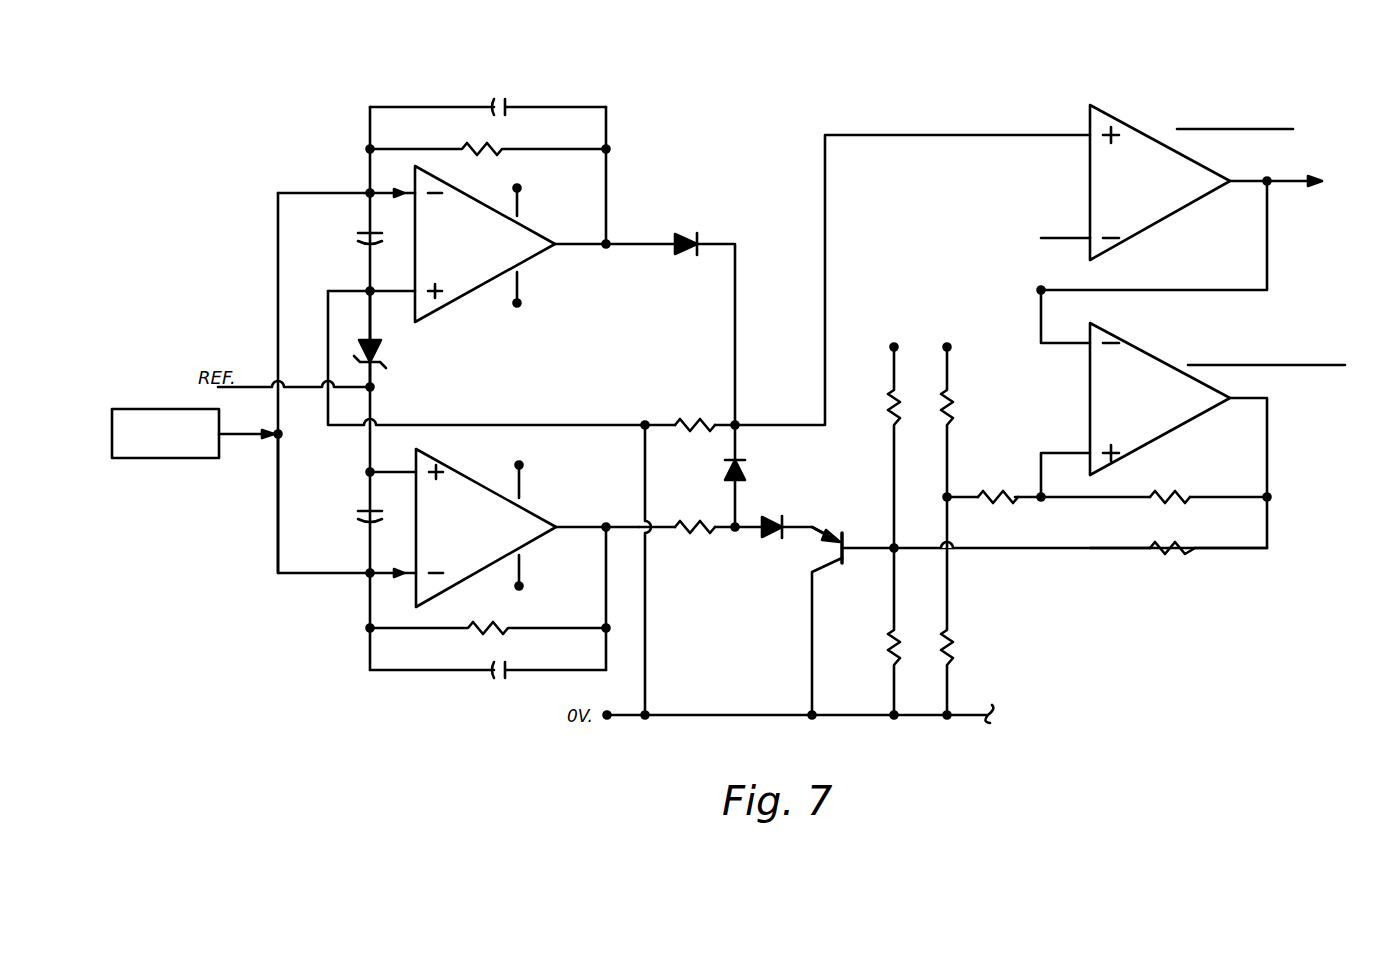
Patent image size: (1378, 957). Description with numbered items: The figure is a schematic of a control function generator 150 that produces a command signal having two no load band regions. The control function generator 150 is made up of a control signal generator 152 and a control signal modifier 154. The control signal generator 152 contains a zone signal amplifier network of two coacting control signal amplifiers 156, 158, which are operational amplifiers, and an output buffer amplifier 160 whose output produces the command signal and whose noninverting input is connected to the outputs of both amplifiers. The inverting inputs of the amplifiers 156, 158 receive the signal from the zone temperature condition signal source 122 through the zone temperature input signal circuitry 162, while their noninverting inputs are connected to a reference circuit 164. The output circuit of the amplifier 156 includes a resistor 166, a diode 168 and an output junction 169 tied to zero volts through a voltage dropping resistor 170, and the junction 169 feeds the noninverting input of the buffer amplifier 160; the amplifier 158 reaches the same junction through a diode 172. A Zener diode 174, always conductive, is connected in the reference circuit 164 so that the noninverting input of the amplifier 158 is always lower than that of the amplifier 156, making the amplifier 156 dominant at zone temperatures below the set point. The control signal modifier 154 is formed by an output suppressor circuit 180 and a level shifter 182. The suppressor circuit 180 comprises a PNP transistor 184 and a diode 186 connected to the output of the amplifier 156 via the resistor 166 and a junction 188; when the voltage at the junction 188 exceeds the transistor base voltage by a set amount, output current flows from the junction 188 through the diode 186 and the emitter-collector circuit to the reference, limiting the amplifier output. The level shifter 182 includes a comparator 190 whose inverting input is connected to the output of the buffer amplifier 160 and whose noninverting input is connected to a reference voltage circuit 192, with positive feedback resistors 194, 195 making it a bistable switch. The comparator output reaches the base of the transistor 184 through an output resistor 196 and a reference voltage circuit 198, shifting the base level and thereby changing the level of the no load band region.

The zone temperature condition signal source 122 is at (149, 408).
The control function generator 150 is at (800, 92).
The control signal generator 152 is at (665, 192).
The control signal modifier 154 is at (1103, 583).
The control signal amplifier 156 is at (486, 526).
The control signal amplifier 158 is at (485, 244).
The output buffer amplifier 160 is at (1180, 224).
The zone temperature input signal circuitry 162 is at (266, 532).
The reference circuit 164 is at (368, 490).
The resistor 166 is at (700, 535).
The diode 168 is at (722, 469).
The output junction 169 is at (740, 418).
The voltage dropping resistor 170 is at (682, 422).
The diode 172 is at (684, 252).
The Zener diode 174 is at (385, 348).
The output suppressor circuit 180 is at (785, 603).
The level shifter 182 is at (1285, 478).
The PNP transistor 184 is at (826, 534).
The diode 186 is at (774, 515).
The junction 188 is at (738, 532).
The comparator 190 is at (1088, 384).
The reference voltage circuit 192 is at (948, 480).
The resistor 194 is at (1170, 492).
The resistor 195 is at (986, 502).
The output resistor 196 is at (1163, 542).
The reference voltage circuit 198 is at (893, 598).